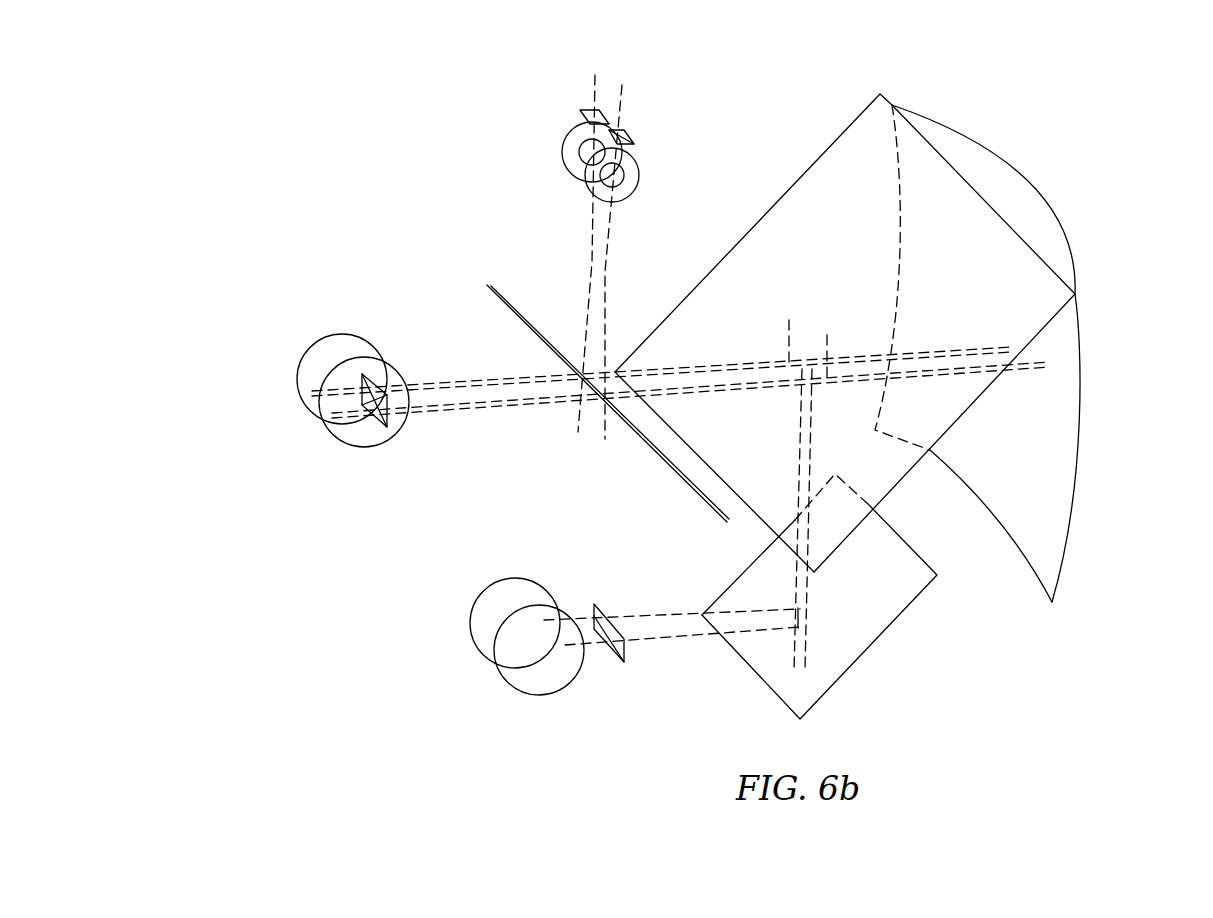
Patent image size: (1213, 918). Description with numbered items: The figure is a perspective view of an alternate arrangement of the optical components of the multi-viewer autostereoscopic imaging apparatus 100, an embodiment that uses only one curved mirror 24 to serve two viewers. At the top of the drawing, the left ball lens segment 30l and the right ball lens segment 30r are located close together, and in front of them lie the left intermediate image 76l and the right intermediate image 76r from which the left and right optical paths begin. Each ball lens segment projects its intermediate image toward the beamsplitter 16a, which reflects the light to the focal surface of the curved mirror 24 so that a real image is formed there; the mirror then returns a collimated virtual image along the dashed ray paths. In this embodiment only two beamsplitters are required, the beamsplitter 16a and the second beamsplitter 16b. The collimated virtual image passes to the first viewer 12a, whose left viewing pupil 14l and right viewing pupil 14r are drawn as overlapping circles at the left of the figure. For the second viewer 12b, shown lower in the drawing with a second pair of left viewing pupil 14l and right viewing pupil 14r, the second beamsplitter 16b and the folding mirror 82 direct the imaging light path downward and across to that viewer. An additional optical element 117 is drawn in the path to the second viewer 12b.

The multi-viewer autostereoscopic imaging apparatus 100 is at (1050, 685).
The curved mirror 24 is at (1033, 185).
The beamsplitter 16a is at (643, 433).
The second beamsplitter 16b is at (752, 513).
The folding mirror 82 is at (883, 630).
The right ball lens segment 30r is at (560, 155).
The left ball lens segment 30l is at (633, 187).
The right intermediate image 76r is at (573, 118).
The left intermediate image 76l is at (632, 135).
The viewer 12a is at (312, 307).
The viewer 12b is at (450, 570).
The left viewing pupil 14l is at (298, 337).
The right viewing pupil 14r is at (340, 442).
The lens element 117 is at (603, 600).